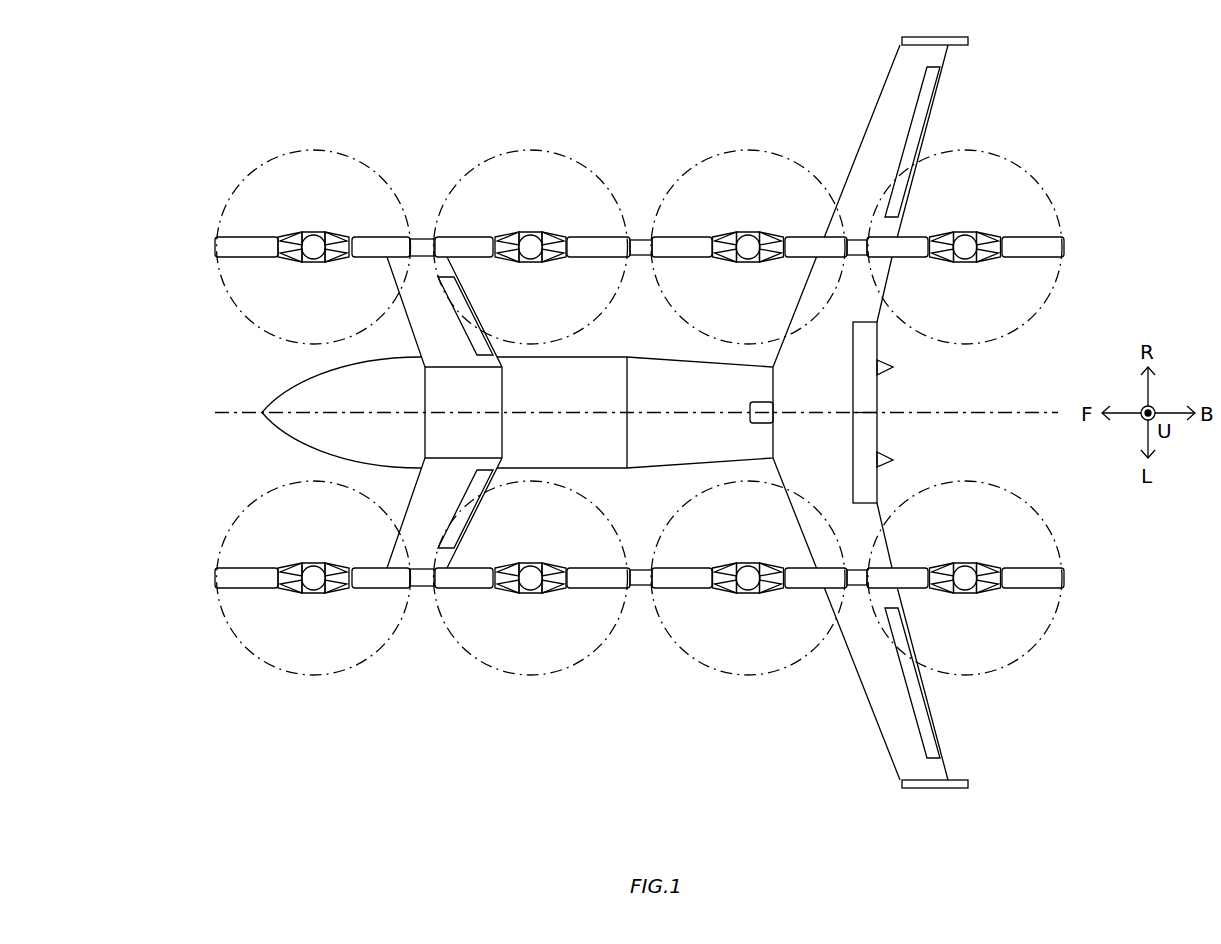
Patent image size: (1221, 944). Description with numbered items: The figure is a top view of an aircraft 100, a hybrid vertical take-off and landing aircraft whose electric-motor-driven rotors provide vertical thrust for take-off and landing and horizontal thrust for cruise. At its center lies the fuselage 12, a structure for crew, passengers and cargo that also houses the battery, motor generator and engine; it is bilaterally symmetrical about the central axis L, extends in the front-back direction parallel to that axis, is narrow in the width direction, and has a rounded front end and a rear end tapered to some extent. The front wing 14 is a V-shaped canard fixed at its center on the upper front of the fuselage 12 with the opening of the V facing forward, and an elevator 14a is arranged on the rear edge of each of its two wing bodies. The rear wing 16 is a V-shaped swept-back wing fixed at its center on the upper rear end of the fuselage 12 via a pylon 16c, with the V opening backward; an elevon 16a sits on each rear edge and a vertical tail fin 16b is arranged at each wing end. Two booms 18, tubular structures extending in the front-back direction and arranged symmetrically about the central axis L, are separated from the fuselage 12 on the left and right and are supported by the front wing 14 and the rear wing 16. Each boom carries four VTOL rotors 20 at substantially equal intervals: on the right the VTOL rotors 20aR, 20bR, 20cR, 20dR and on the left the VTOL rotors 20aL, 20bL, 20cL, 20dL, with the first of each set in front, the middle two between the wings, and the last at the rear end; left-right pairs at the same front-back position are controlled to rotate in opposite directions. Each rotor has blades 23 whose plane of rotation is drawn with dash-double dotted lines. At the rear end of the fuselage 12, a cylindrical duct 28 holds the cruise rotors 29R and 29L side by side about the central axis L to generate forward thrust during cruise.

The aircraft 100 is at (160, 47).
The fuselage 12 is at (292, 397).
The front wing 14 is at (425, 323).
The elevator 14a is at (470, 305).
The rear wing 16 is at (885, 125).
The elevon 16a is at (930, 100).
The vertical tail fin 16b is at (970, 42).
The pylon 16c is at (757, 402).
The boom 18 is at (418, 237).
The VTOL rotor 20 is at (617, 414).
The VTOL rotor 20aR is at (290, 215).
The VTOL rotor 20bR is at (545, 212).
The VTOL rotor 20cR is at (735, 212).
The VTOL rotor 20dR is at (985, 215).
The VTOL rotor 20aL is at (292, 610).
The VTOL rotor 20bL is at (545, 612).
The VTOL rotor 20cL is at (735, 612).
The VTOL rotor 20dL is at (985, 612).
The blade 23 is at (235, 245).
The duct 28 is at (870, 337).
The cruise rotor 29R is at (893, 367).
The cruise rotor 29L is at (893, 460).
The central axis L is at (1042, 415).